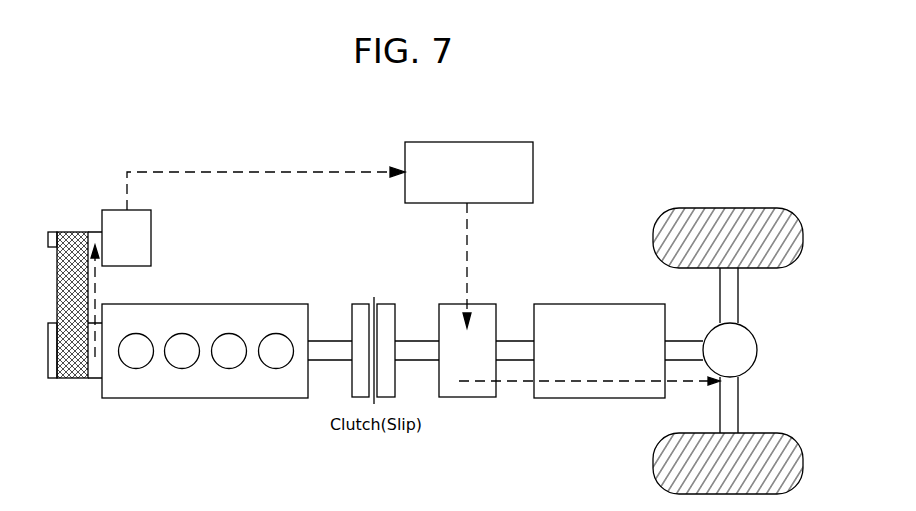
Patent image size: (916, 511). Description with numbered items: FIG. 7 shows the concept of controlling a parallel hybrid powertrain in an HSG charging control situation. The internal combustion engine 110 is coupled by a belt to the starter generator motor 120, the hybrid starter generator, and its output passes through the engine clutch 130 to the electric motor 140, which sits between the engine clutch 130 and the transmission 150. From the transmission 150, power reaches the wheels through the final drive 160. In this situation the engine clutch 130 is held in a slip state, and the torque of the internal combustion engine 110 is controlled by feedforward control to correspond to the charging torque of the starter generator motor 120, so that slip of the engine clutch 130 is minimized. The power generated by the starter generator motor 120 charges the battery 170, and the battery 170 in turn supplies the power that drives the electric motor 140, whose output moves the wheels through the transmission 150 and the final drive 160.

The internal combustion engine 110 is at (268, 304).
The starter generator motor 120 is at (151, 240).
The engine clutch 130 is at (390, 304).
The electric motor 140 is at (490, 304).
The transmission 150 is at (598, 304).
The final drive 160 is at (757, 350).
The battery 170 is at (533, 172).